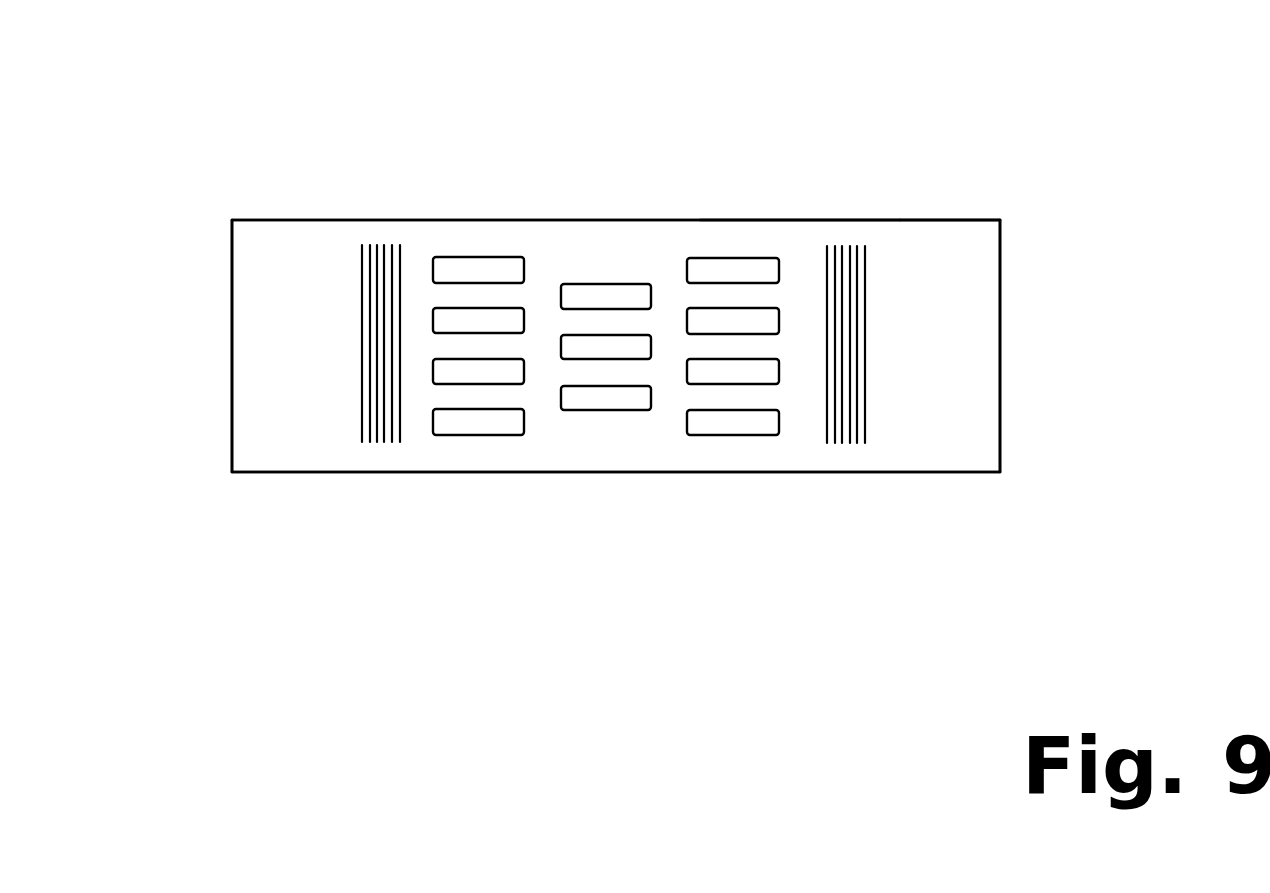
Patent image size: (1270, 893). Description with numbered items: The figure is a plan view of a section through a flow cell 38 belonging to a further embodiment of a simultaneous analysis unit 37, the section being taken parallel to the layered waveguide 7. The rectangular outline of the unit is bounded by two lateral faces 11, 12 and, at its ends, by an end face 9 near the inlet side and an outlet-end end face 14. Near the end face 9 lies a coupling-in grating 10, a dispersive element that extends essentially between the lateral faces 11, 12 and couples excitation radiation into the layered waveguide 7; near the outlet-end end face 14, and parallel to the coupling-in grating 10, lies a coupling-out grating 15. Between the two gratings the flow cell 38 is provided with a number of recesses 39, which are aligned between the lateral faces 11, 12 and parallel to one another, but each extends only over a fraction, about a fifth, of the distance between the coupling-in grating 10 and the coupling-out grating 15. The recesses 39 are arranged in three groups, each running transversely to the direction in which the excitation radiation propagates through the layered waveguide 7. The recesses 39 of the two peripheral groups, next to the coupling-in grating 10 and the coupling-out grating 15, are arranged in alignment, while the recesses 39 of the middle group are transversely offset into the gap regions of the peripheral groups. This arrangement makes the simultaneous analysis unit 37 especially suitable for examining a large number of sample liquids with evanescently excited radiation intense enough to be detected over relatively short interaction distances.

The layered waveguide 7 is at (968, 447).
The end face 9 is at (232, 272).
The coupling-in grating 10 is at (343, 339).
The lateral face 11 is at (268, 473).
The lateral face 12 is at (275, 220).
The outlet-end end face 14 is at (1000, 383).
The coupling-out grating 15 is at (890, 300).
The simultaneous analysis unit 37 is at (797, 178).
The flow cell 38 is at (957, 247).
The recess 39 is at (458, 318).